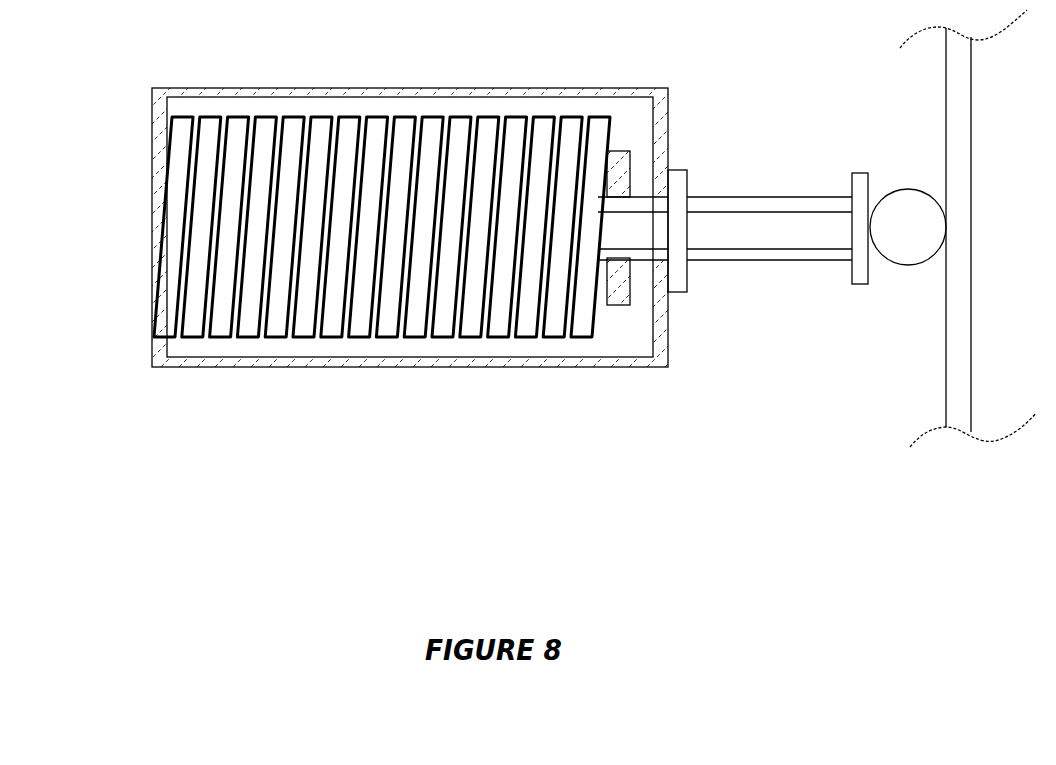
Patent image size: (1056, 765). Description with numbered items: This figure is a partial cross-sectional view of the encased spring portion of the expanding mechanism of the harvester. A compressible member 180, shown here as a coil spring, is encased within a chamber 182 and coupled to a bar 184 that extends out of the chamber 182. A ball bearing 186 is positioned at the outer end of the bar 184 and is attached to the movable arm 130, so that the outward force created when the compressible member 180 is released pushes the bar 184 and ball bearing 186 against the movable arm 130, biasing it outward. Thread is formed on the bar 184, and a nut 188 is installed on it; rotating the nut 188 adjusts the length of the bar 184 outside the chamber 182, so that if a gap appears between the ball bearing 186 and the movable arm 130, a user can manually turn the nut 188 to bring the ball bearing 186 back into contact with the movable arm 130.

The movable arm 130 is at (972, 124).
The compressible member 180 is at (385, 337).
The chamber 182 is at (580, 87).
The bar 184 is at (762, 196).
The ball bearing 186 is at (910, 170).
The nut 188 is at (683, 169).